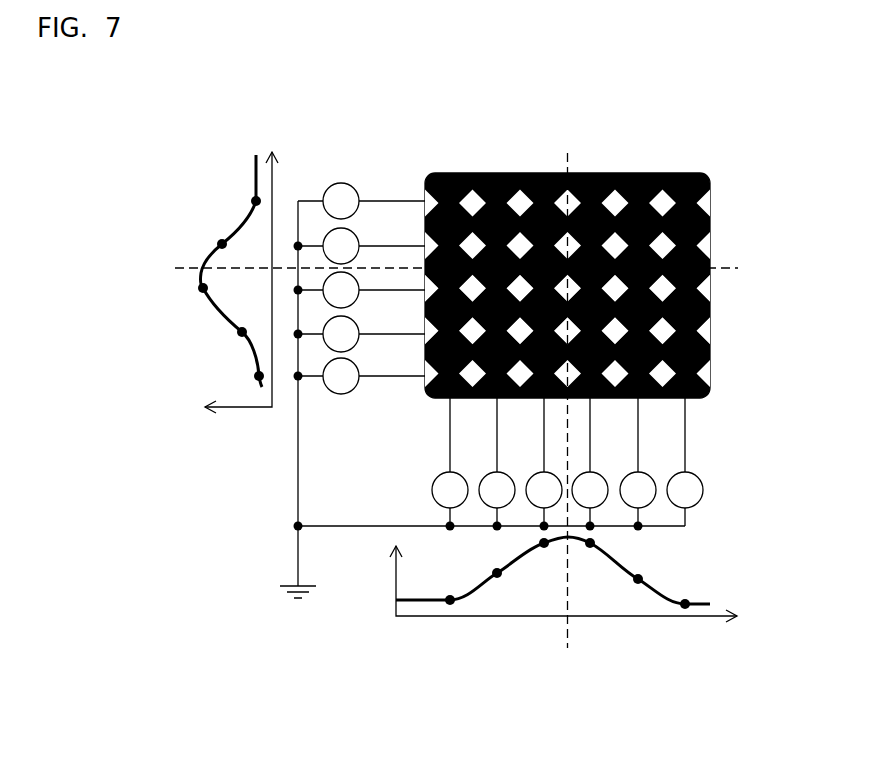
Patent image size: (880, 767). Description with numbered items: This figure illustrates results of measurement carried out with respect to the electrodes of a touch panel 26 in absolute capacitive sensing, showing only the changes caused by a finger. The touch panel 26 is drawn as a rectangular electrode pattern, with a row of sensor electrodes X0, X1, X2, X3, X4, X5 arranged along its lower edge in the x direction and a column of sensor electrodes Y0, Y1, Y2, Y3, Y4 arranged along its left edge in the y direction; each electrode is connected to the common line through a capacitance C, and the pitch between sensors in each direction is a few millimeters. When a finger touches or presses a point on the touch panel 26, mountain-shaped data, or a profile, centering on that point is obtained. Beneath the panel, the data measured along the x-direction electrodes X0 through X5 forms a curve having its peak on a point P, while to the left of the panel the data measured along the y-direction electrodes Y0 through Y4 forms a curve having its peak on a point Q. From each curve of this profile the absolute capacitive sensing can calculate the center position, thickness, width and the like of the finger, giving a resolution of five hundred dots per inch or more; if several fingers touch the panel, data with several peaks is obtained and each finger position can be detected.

The touch panel 26 is at (688, 173).
The point Q is at (272, 268).
The point P is at (568, 617).
The X electrode X0 with capacitor C X0 is at (444, 464).
The X electrode X1 with capacitor C X1 is at (491, 464).
The X electrode X2 with capacitor C X2 is at (538, 464).
The X electrode X3 with capacitor C X3 is at (584, 464).
The X electrode X4 with capacitor C X4 is at (632, 464).
The X electrode X5 with capacitor C X5 is at (679, 462).
The Y electrode Y0 with capacitor C Y0 is at (360, 380).
The Y electrode Y1 with capacitor C Y1 is at (360, 338).
The Y electrode Y2 with capacitor C Y2 is at (360, 294).
The Y electrode Y3 with capacitor C Y3 is at (360, 250).
The Y electrode Y4 with capacitor C Y4 is at (361, 205).